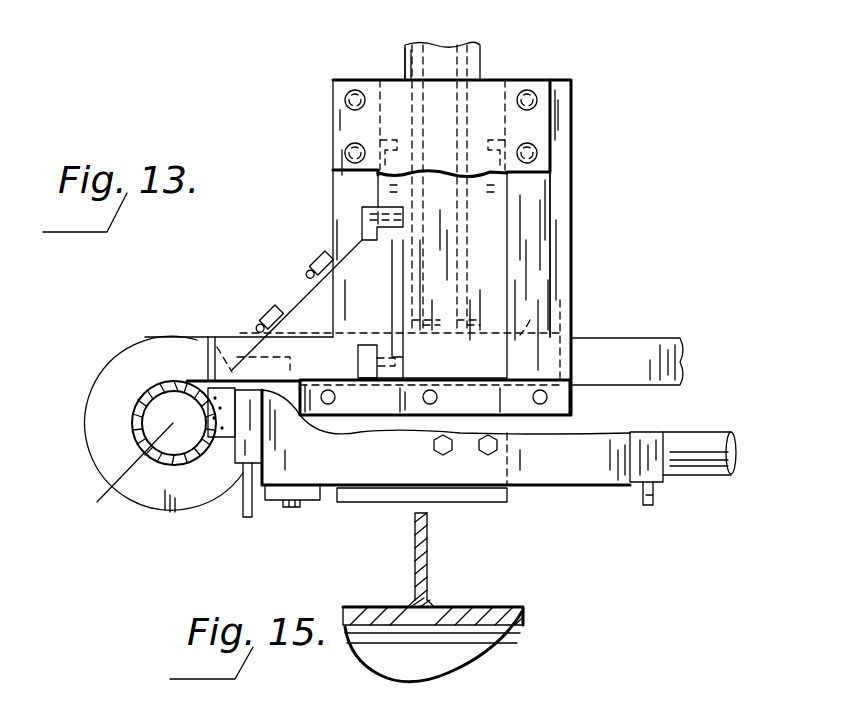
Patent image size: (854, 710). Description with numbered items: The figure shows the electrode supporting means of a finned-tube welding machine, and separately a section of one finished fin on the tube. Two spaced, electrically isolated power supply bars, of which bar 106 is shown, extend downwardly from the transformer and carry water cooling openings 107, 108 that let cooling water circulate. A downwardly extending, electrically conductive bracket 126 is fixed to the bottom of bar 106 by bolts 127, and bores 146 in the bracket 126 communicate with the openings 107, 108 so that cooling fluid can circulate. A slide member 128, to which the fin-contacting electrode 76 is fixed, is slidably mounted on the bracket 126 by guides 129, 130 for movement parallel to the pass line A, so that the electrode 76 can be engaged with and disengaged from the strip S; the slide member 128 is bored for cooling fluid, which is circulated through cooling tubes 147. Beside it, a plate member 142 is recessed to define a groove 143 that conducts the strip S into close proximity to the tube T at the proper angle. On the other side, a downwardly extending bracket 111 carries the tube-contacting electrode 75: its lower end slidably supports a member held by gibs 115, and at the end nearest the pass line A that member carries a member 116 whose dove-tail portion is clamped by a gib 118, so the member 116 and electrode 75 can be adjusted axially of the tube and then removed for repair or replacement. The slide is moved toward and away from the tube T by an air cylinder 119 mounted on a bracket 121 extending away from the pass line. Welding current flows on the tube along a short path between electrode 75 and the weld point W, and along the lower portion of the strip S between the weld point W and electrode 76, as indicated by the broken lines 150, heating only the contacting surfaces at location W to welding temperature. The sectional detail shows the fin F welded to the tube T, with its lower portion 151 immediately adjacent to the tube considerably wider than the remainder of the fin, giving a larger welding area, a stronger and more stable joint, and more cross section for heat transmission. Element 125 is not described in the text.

In FIG. 13, the power supply bar 106 is at (405, 65).
In FIG. 13, the water cooling opening 107 is at (470, 60).
In FIG. 13, the water cooling opening 108 is at (405, 52).
In FIG. 13, the bolts 127 is at (513, 140).
In FIG. 13, the bracket 126 is at (493, 217).
In FIG. 13, the plate member 142 is at (558, 257).
In FIG. 13, the groove 143 is at (550, 330).
In FIG. 13, the bores 146 is at (425, 247).
In FIG. 13, the guide 129 is at (362, 228).
In FIG. 13, the cooling tubes 147 is at (262, 316).
In FIG. 13, the slide member 128 is at (312, 297).
In FIG. 13, the fin-contacting electrode 76 is at (258, 337).
In FIG. 13, the broken lines 150 is at (190, 340).
In FIG. 13, the guide 130 is at (368, 378).
In FIG. 13, the gibs 115 is at (362, 500).
In FIG. 13, the tube T is at (135, 405).
In FIG. 15, the tube T is at (512, 607).
In FIG. 13, the fin F is at (90, 437).
In FIG. 15, the fin F is at (428, 563).
In FIG. 13, the pass line A is at (121, 469).
In FIG. 13, the weld point W is at (182, 380).
In FIG. 13, the member 116 is at (235, 488).
In FIG. 13, the tube-contacting electrode 75 is at (237, 445).
In FIG. 13, the pin 125 is at (248, 510).
In FIG. 13, the bracket 111 is at (446, 437).
In FIG. 13, the gib 118 is at (272, 502).
In FIG. 13, the bracket 121 is at (537, 478).
In FIG. 13, the air cylinder 119 is at (690, 478).
In FIG. 13, the strip S is at (643, 338).
In FIG. 15, the lower portion of the fin 151 is at (428, 602).